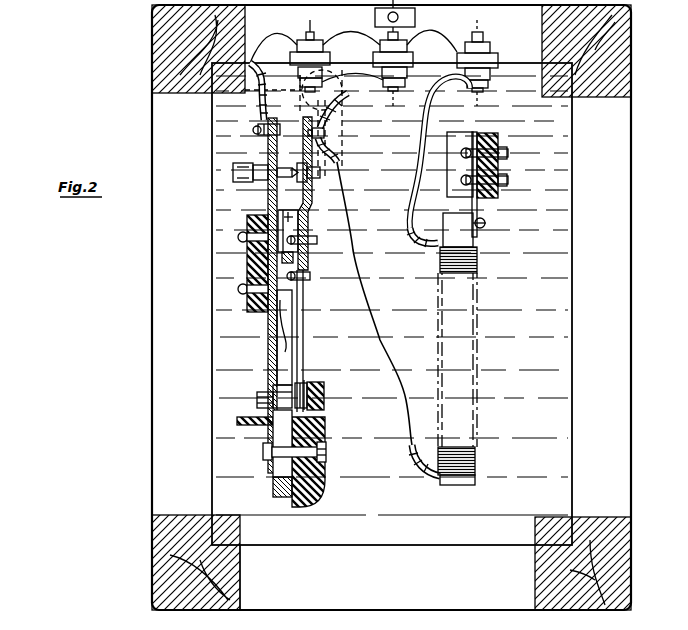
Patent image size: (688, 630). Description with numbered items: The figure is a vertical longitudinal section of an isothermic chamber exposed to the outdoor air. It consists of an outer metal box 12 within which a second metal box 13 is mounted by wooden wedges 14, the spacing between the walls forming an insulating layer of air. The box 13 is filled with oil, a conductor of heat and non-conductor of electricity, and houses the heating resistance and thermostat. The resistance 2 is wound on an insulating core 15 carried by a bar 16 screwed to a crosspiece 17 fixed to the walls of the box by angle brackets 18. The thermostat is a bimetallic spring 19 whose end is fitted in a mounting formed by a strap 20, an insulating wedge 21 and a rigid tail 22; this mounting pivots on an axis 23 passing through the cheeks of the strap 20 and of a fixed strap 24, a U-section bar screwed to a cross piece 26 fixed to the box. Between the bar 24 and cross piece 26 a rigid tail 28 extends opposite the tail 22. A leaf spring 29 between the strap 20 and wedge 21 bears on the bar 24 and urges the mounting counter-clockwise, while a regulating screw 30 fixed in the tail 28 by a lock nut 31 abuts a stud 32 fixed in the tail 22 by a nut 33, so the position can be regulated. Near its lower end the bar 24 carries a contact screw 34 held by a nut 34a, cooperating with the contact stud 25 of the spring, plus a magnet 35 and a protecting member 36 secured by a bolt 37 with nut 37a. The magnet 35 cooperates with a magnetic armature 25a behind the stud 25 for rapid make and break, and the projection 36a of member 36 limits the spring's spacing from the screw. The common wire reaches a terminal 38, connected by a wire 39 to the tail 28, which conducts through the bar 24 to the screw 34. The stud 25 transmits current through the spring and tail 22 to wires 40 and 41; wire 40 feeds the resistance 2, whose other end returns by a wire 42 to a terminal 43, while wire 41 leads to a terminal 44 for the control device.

The resistance 2 is at (462, 300).
The outer metal box 12 is at (152, 333).
The second metal box 13 is at (212, 258).
The wooden wedges 14 is at (240, 578).
The insulating core 15 is at (462, 480).
The bar 16 is at (477, 207).
The crosspiece 17 is at (488, 135).
The angle brackets 18 is at (452, 134).
The bimetallic spring 19 is at (305, 312).
The strap 20 is at (287, 210).
The insulating wedge 21 is at (311, 267).
The rigid tail 22 is at (313, 223).
The axis 23 is at (317, 250).
The fixed strap 24 is at (268, 205).
The contact stud 25 is at (300, 387).
The magnetic armature 25a is at (305, 390).
The cross piece 26 is at (252, 263).
The rigid tail 28 is at (268, 150).
The leaf spring 29 is at (272, 328).
The regulating screw 30 is at (283, 167).
The lock nut 31 is at (245, 152).
The stud 32 is at (311, 133).
The nut 33 is at (336, 157).
The contact screw 34 is at (280, 387).
The nut 34a is at (268, 391).
The magnet 35 is at (287, 432).
The protecting member 36 is at (326, 430).
The projection 36a is at (324, 393).
The bolt 37 is at (283, 452).
The nut 37a is at (327, 452).
The terminal 38 is at (325, 54).
The wire 39 is at (250, 85).
The wire 40 is at (368, 297).
The wire 41 is at (346, 93).
The wire 42 is at (428, 152).
The terminal 43 is at (490, 62).
The terminal 44 is at (413, 58).